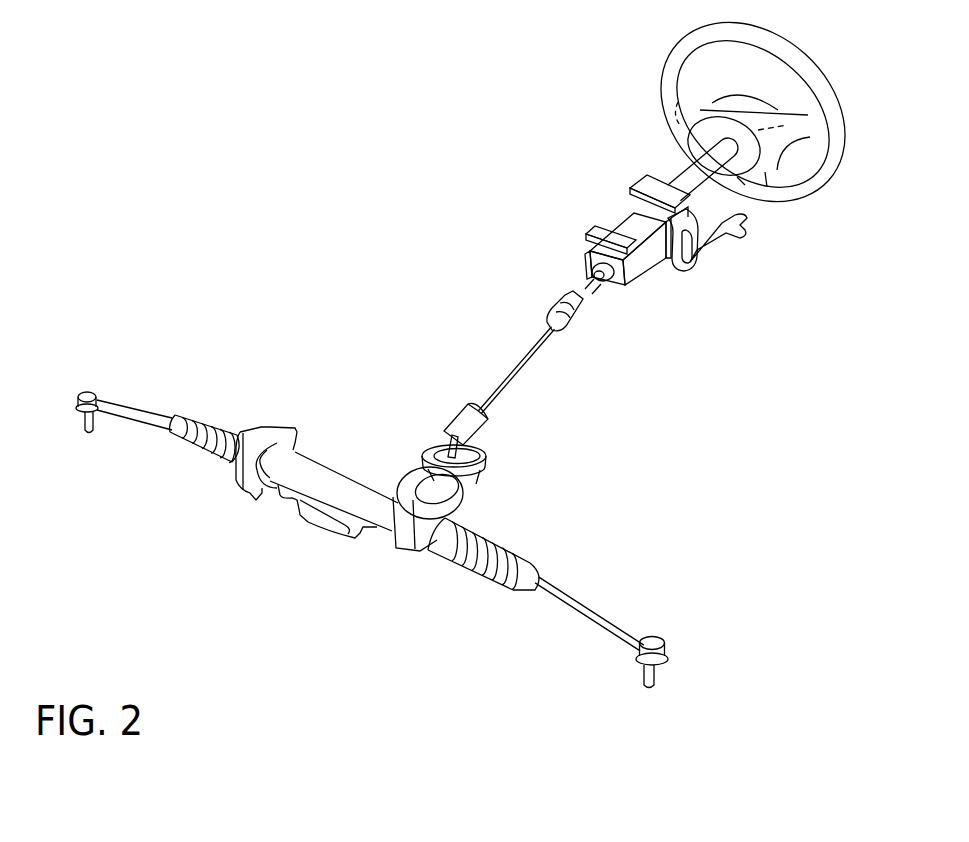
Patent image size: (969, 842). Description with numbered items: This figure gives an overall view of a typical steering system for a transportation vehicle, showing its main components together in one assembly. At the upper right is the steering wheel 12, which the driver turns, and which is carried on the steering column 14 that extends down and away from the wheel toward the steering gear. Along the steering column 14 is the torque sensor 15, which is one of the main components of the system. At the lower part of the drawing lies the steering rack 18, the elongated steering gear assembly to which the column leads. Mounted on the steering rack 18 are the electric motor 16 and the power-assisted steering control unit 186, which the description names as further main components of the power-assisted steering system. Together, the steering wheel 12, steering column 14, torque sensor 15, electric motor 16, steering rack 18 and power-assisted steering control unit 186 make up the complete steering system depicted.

The steering wheel 12 is at (818, 176).
The steering column 14 is at (585, 288).
The torque sensor 15 is at (638, 217).
The electric motor 16 is at (266, 430).
The steering rack 18 is at (377, 505).
The power-assisted steering control unit 186 is at (317, 513).